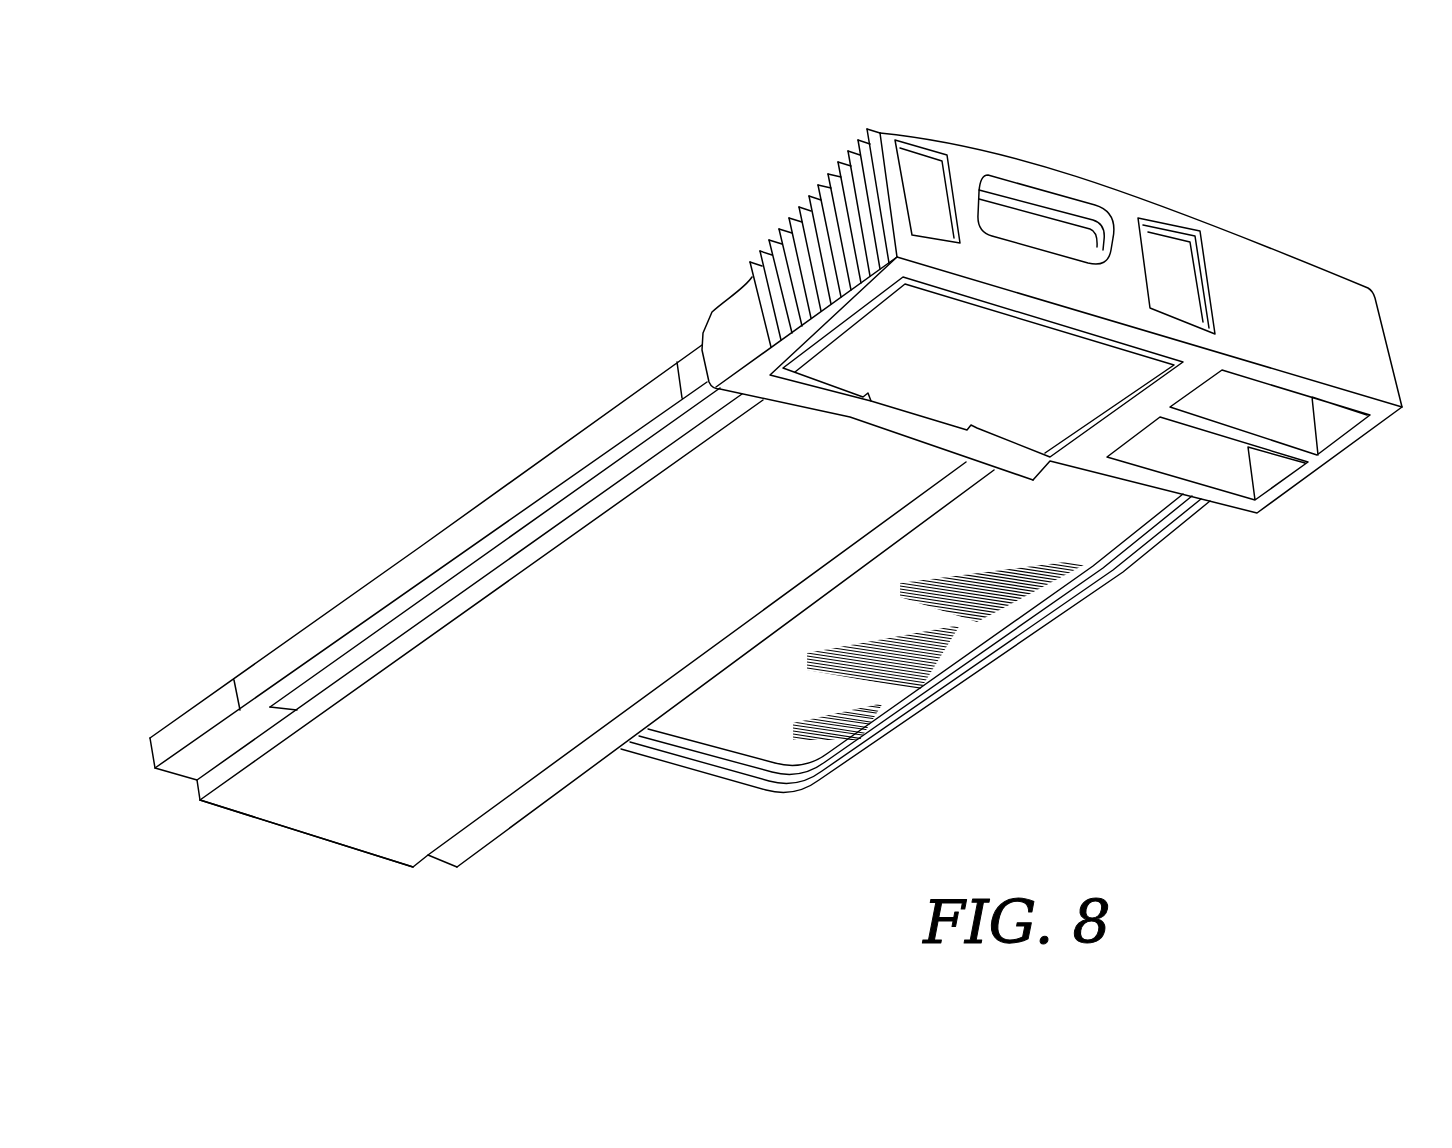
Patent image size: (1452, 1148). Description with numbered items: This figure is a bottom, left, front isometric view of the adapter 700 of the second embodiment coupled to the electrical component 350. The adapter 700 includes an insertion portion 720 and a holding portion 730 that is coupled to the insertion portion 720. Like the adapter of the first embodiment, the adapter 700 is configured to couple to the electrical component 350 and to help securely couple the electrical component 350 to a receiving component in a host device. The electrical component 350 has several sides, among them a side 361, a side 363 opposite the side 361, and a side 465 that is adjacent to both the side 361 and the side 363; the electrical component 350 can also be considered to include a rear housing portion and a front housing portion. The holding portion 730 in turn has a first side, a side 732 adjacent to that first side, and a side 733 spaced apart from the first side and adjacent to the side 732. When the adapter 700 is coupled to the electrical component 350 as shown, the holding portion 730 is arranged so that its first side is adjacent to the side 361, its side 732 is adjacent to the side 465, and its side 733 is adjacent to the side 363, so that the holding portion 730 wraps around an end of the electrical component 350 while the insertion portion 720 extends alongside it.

The adapter 700 is at (801, 498).
The holding portion 730 is at (1063, 296).
The side 733 is at (806, 190).
The side 732 is at (1062, 300).
The electrical component 350 is at (572, 631).
The side 363 is at (310, 645).
The side 361 is at (567, 783).
The side 465 is at (307, 833).
The insertion portion 720 is at (965, 677).